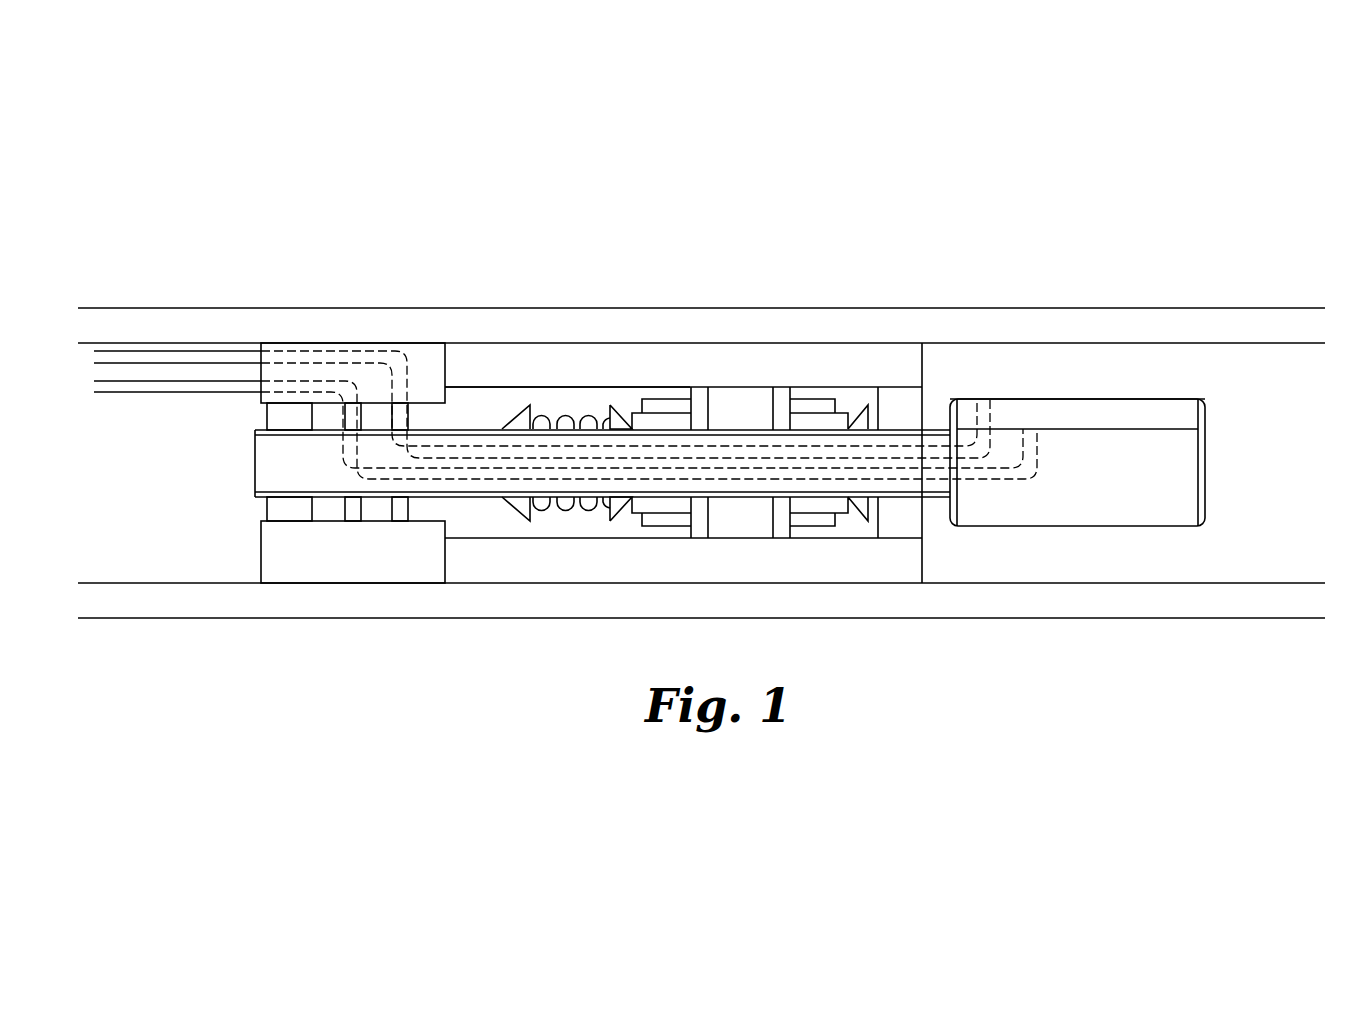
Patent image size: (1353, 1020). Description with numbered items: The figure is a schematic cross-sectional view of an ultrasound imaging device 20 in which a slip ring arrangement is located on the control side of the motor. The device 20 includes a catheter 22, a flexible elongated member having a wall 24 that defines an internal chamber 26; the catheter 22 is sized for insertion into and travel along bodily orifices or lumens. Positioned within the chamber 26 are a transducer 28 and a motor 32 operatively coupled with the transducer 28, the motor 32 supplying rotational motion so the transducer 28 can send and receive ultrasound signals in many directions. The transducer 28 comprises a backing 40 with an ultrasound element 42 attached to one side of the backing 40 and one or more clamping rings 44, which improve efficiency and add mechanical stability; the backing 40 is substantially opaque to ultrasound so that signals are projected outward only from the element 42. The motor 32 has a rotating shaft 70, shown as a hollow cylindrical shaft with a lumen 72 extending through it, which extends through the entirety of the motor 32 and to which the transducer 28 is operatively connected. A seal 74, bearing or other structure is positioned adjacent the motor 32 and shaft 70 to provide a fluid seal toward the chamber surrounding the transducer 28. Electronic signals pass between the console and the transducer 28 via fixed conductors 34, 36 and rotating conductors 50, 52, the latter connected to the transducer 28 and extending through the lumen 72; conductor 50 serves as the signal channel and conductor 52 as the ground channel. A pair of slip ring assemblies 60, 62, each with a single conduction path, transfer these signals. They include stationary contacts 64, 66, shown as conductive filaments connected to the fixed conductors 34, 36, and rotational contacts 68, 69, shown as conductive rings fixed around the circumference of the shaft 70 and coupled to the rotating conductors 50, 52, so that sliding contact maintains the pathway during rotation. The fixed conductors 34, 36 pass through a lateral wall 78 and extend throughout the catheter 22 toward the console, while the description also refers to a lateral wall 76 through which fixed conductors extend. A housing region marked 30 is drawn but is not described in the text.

The device 20 is at (684, 201).
The catheter 22 is at (1057, 307).
The wall 24 is at (952, 327).
The internal chamber 26 is at (1237, 363).
The transducer 28 is at (1165, 400).
The housing 30 is at (745, 339).
The motor 32 is at (820, 396).
The fixed conductor 34 is at (200, 352).
The fixed conductor 36 is at (118, 384).
The backing 40 is at (1113, 497).
The ultrasound element 42 is at (1128, 400).
The clamping ring 44 is at (1208, 465).
The rotating conductor 50 is at (1010, 420).
The rotating conductor 52 is at (717, 480).
The slip ring assembly 60 is at (393, 527).
The slip ring assembly 62 is at (345, 527).
The stationary contact 64 is at (410, 507).
The stationary contact 66 is at (300, 508).
The rotational contact 68 is at (380, 410).
The rotational contact 69 is at (330, 420).
The rotating shaft 70 is at (478, 421).
The lumen 72 is at (612, 515).
The seal 74 is at (270, 520).
The lateral wall 76 is at (607, 365).
The lateral wall 78 is at (412, 355).